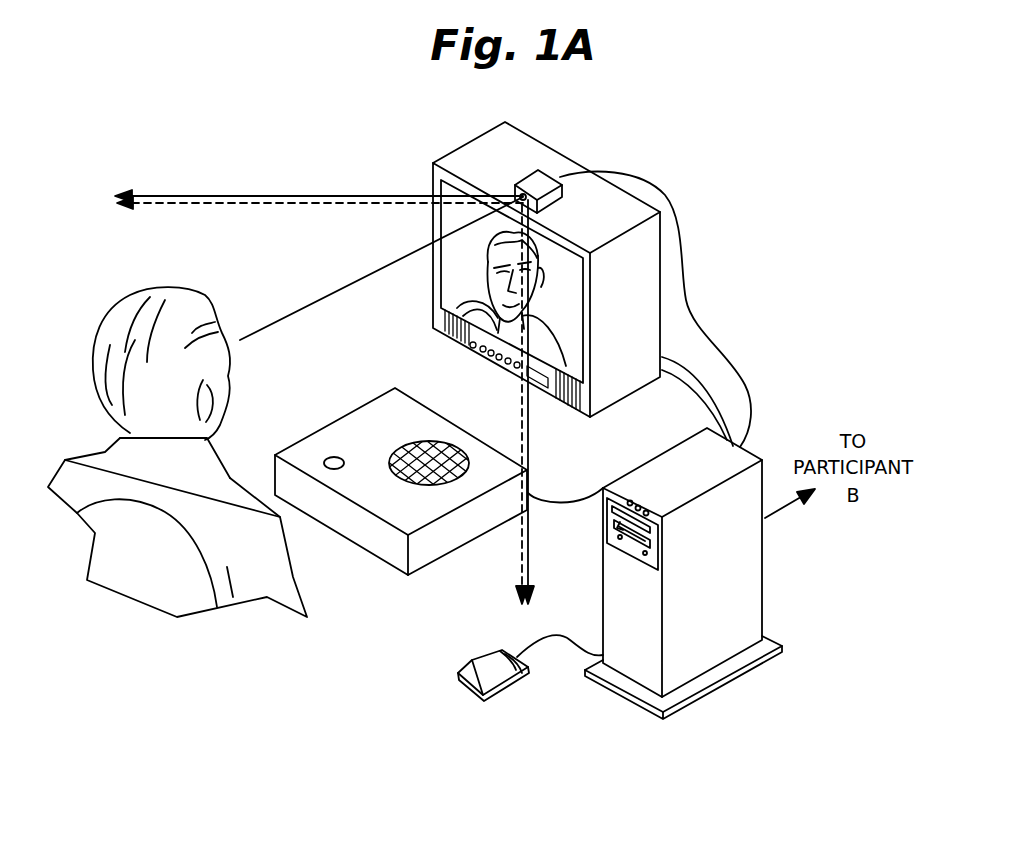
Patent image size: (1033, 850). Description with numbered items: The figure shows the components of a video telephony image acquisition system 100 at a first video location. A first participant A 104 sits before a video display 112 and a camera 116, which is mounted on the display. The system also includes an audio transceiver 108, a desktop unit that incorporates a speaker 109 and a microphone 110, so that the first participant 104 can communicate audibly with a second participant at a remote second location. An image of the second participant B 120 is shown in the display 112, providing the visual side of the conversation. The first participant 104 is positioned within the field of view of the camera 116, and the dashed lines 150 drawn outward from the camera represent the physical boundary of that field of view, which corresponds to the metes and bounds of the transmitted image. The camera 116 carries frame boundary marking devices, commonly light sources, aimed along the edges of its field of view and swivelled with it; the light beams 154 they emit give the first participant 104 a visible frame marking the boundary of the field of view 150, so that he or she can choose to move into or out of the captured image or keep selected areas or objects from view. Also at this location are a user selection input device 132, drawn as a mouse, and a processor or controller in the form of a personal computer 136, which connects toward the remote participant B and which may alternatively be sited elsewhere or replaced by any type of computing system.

The video telephony image acquisition system 100 is at (434, 99).
The first participant A 104 is at (146, 287).
The audio transceiver 108 is at (467, 540).
The speaker 109 is at (440, 443).
The microphone 110 is at (332, 457).
The video display 112 is at (665, 293).
The camera 116 is at (538, 177).
The image of the second participant B 120 is at (503, 318).
The user selection input device 132 is at (490, 697).
The personal computer (PC) 136 is at (762, 578).
The field of view 150 is at (528, 447).
The light beams 154 is at (528, 443).